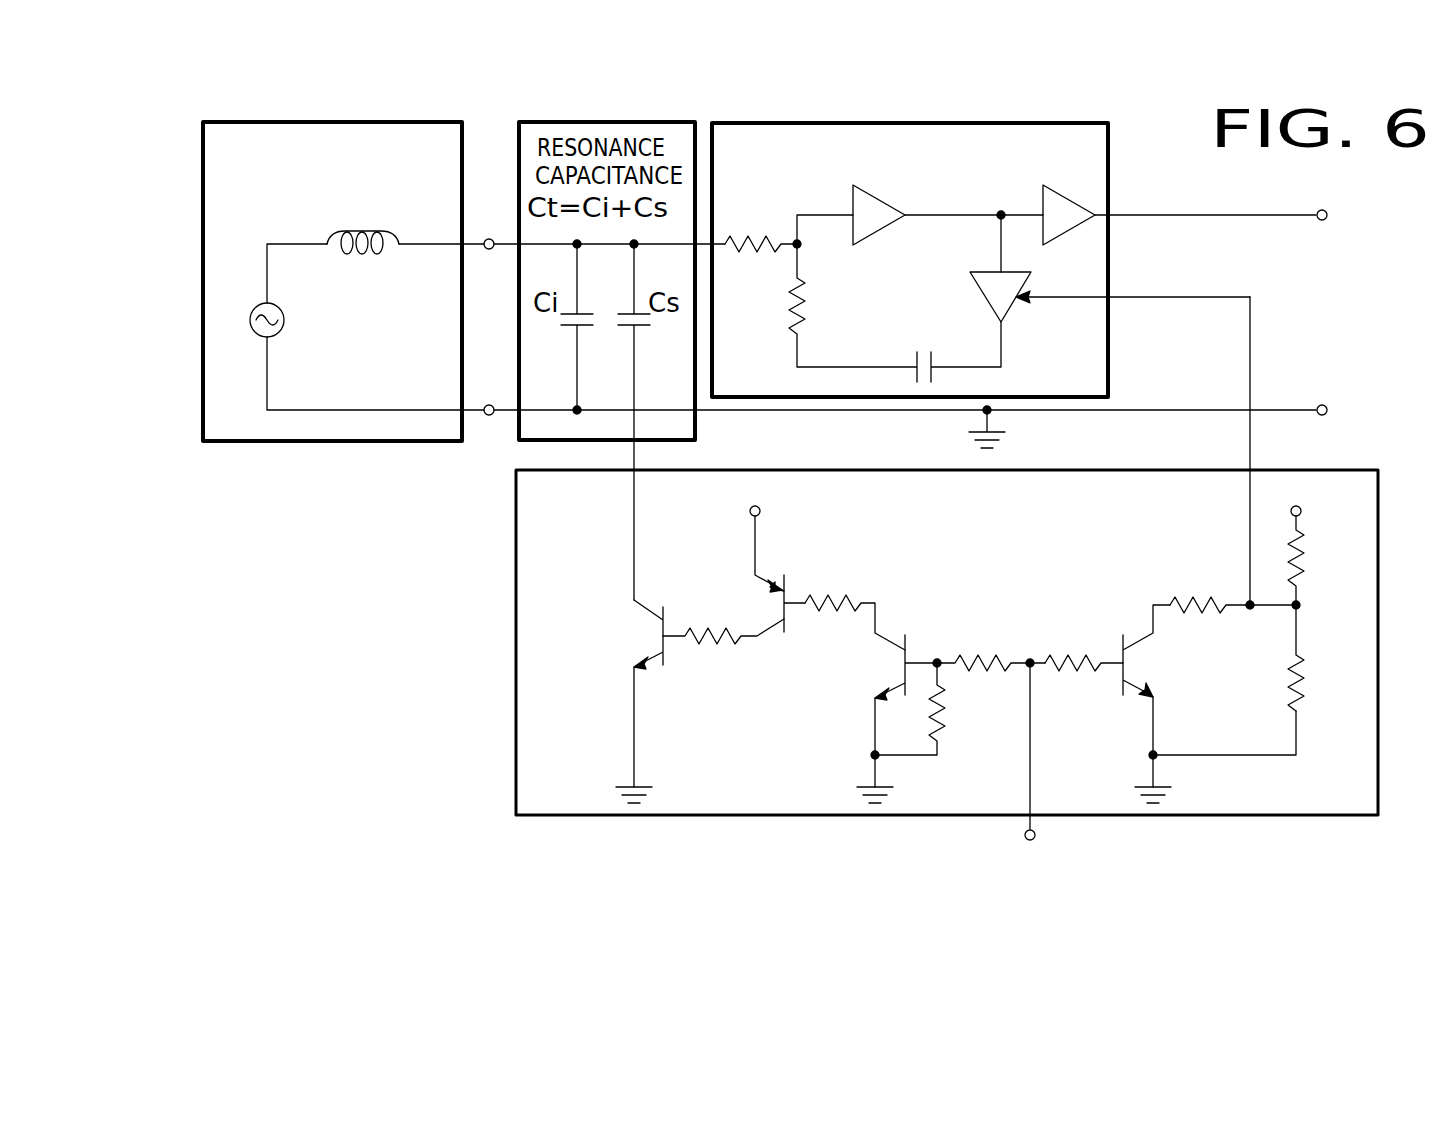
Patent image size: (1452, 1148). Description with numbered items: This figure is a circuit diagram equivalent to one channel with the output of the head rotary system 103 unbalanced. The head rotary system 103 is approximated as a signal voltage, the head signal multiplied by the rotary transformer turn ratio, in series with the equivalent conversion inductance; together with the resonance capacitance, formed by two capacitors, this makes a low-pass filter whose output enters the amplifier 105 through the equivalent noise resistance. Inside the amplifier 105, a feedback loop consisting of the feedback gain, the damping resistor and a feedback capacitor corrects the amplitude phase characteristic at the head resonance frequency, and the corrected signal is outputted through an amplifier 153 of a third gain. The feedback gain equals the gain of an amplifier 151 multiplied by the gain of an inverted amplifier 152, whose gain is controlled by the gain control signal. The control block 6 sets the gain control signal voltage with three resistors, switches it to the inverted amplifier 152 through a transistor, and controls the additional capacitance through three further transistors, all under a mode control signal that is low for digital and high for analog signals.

The head rotary system 103 is at (243, 443).
The amplifier 105 is at (1045, 260).
The control circuit 6 is at (516, 516).
The amplifier 151 is at (853, 197).
The inverted amplifier 152 is at (1018, 310).
The amplifier 153 is at (1043, 197).